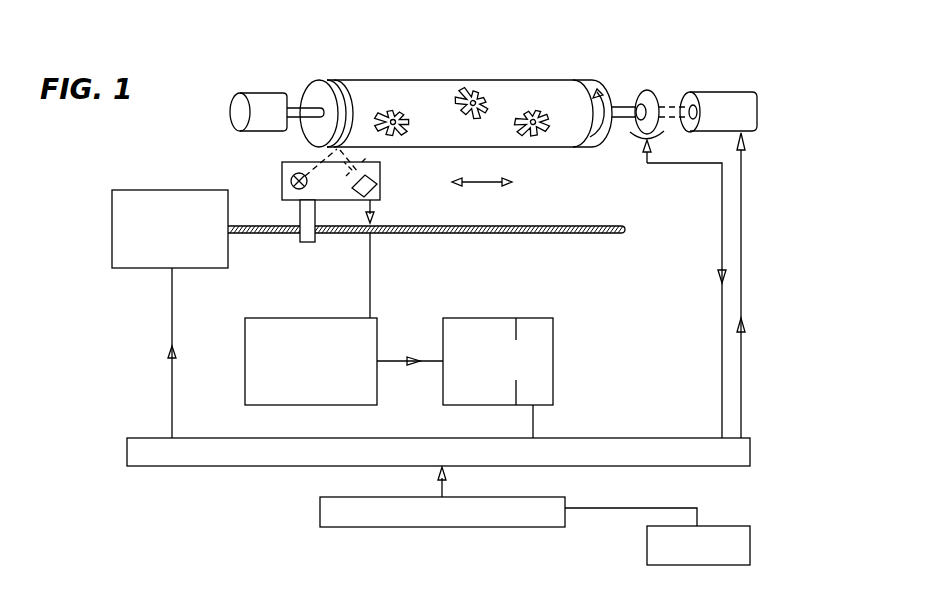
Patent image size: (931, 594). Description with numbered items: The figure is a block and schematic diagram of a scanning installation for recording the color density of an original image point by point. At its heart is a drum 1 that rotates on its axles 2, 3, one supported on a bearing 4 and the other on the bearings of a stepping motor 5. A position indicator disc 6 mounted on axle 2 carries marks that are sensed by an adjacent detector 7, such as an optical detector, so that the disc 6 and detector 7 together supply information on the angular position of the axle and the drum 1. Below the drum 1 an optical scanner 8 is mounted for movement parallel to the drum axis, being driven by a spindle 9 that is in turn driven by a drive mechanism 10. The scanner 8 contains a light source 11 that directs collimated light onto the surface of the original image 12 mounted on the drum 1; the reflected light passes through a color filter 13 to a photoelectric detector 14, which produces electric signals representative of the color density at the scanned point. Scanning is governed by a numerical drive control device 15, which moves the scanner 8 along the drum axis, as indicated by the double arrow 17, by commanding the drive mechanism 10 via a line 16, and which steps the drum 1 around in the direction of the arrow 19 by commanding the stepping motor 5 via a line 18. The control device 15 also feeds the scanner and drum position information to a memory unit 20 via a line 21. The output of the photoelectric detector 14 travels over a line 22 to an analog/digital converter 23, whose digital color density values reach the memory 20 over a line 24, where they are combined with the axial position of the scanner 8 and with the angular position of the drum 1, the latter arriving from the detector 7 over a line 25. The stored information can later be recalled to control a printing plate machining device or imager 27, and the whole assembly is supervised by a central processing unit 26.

The drum 1 is at (592, 68).
The axle 2 is at (642, 94).
The axle 3 is at (290, 108).
The bearing 4 is at (256, 100).
The stepping motor 5 is at (740, 92).
The position indicator disc 6 is at (654, 93).
The detector 7 is at (633, 137).
The optical scanner 8 is at (392, 173).
The spindle 9 is at (543, 228).
The drive mechanism 10 is at (172, 192).
The light source 11 is at (287, 181).
The original image 12 is at (428, 86).
The color filter 13 is at (357, 168).
The photoelectric detector 14 is at (377, 186).
The numerical drive control device 15 is at (677, 458).
The line 16 is at (174, 396).
The double arrow 17 is at (480, 184).
The line 18 is at (742, 366).
The arrow 19 is at (590, 139).
The memory unit 20 is at (554, 348).
The line 21 is at (535, 430).
The line 22 is at (372, 285).
The analog/digital converter 23 is at (300, 322).
The line 24 is at (392, 364).
The line 25 is at (720, 322).
The central processing unit 26 is at (500, 528).
The imager 27 is at (735, 526).